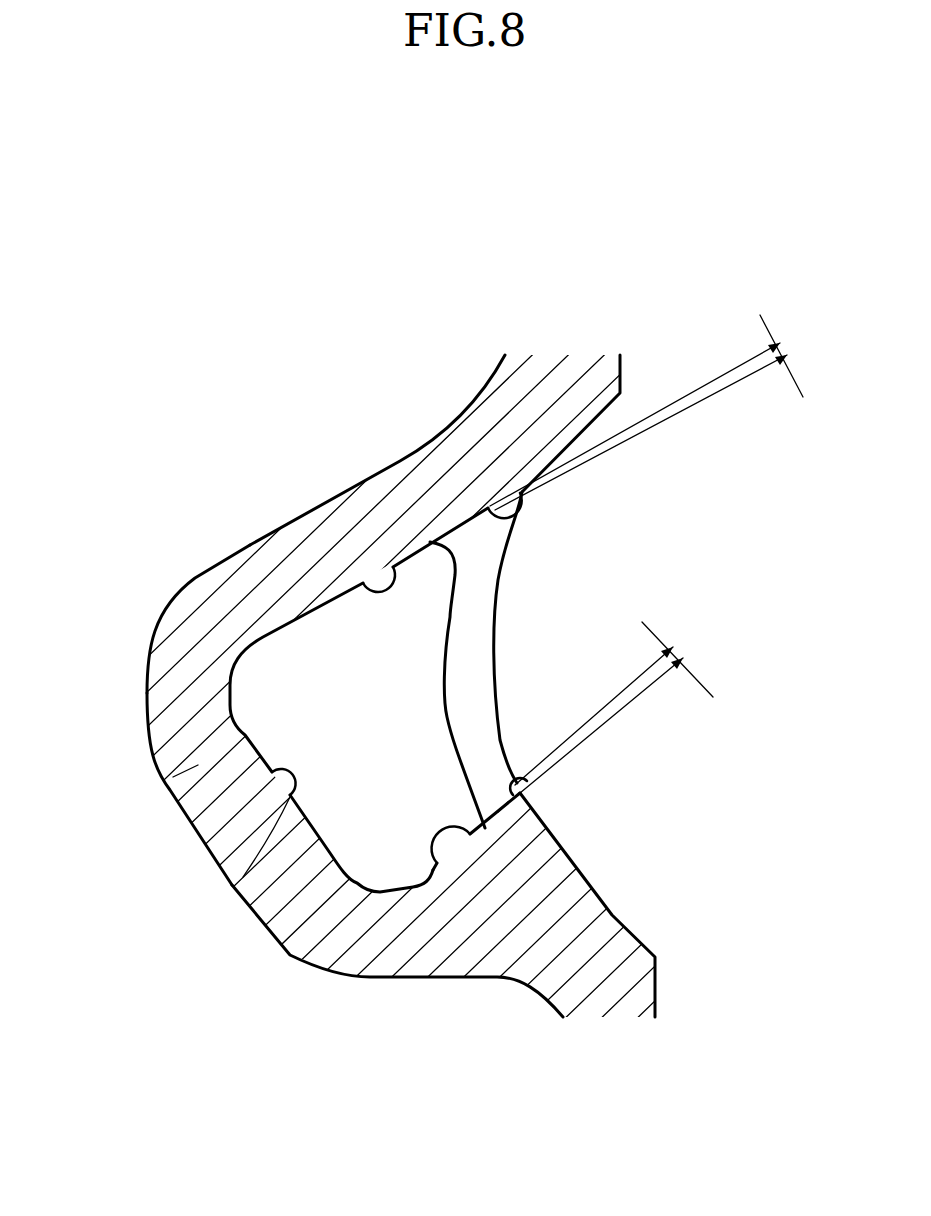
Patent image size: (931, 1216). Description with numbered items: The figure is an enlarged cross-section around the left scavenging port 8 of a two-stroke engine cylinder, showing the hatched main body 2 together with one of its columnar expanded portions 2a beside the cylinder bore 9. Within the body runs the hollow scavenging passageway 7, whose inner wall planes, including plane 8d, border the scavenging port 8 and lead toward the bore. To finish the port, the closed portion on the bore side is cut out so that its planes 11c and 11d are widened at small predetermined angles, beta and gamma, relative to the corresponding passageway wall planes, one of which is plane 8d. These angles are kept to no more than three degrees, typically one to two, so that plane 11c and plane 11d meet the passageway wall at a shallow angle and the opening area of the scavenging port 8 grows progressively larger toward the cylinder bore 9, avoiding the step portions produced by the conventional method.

The main body 2 is at (210, 567).
The columnar expanded portion 2a is at (172, 782).
The hollow scavenging passageway 7 is at (232, 885).
The scavenging port 8 is at (363, 583).
The plane of the inner wall of the hollow scavenging passageway 8d is at (437, 863).
The cylinder bore 9 is at (614, 919).
The plane of the cut-out work portion 11c is at (486, 505).
The plane of the cut-out work portion 11d is at (530, 783).